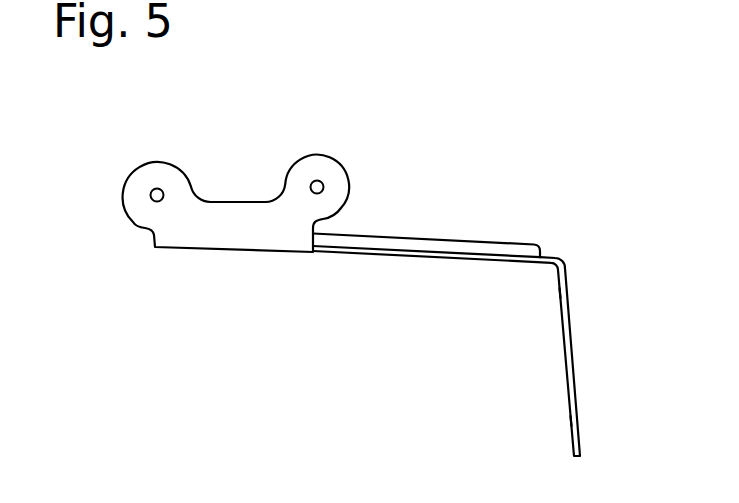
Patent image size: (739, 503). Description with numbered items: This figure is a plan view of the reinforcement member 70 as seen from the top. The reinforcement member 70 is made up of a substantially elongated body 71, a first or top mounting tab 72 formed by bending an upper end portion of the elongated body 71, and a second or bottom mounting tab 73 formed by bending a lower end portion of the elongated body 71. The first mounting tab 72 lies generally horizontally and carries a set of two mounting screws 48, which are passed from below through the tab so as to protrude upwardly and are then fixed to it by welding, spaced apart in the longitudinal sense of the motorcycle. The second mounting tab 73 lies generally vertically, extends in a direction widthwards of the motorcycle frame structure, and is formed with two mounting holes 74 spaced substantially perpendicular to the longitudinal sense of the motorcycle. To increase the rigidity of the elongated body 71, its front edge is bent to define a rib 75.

The mounting screws 48 is at (154, 195).
The reinforcement member 70 is at (417, 232).
The elongated body 71 is at (497, 245).
The first mounting tab 72 is at (222, 207).
The second mounting tab 73 is at (575, 347).
The mounting holes 74 is at (570, 292).
The rib 75 is at (454, 243).